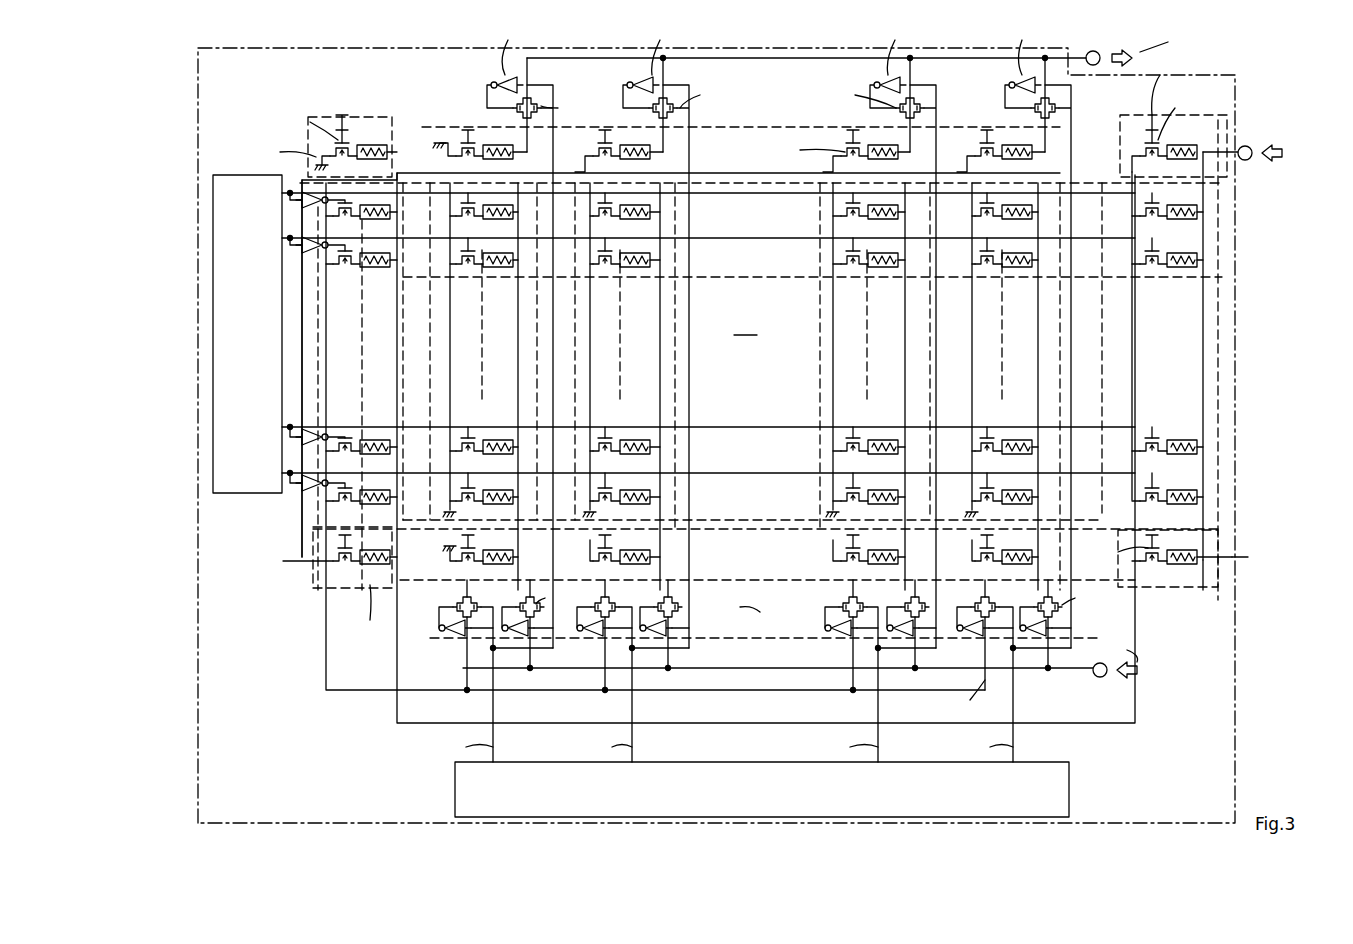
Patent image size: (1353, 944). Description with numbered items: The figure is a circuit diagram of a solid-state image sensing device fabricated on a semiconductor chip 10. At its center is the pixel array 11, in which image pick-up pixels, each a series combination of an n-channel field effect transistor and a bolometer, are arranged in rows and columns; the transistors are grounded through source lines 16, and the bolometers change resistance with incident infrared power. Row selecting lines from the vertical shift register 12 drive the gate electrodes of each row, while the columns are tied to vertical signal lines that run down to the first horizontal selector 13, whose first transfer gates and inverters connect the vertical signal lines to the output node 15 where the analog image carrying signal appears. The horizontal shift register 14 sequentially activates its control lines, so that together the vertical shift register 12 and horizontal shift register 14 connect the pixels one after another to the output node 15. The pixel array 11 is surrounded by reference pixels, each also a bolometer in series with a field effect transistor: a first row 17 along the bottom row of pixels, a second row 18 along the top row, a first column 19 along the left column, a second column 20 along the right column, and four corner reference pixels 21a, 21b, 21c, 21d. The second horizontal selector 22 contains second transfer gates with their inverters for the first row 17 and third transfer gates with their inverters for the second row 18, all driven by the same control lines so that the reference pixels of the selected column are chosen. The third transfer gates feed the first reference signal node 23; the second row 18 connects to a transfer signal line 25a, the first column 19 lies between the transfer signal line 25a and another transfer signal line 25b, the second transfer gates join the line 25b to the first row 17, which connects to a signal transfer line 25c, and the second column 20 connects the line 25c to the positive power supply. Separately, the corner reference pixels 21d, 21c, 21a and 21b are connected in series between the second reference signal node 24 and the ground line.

The semiconductor chip 10 is at (1237, 687).
The pixel array 11 is at (752, 421).
The vertical shift register 12 is at (213, 340).
The first horizontal selector 13 is at (707, 652).
The horizontal shift register 14 is at (1069, 793).
The output node 15 is at (1103, 677).
The source lines 16 is at (815, 355).
The first row of reference image pick-up pixels 17 is at (443, 580).
The second row of reference image pick-up pixels 18 is at (445, 110).
The first column of reference pixels 19 is at (330, 505).
The second column of reference pixels 20 is at (1073, 348).
The reference pixel 21a is at (312, 585).
The reference pixel 21b is at (333, 118).
The reference pixel 21c is at (1190, 600).
The reference pixel 21d is at (1130, 120).
The second horizontal selector 22 is at (489, 83).
The first reference signal node 23 is at (1098, 52).
The second reference signal node 24 is at (1245, 146).
The transfer signal line 25a is at (410, 120).
The transfer signal line 25b is at (336, 697).
The signal transfer line 25c is at (1205, 350).